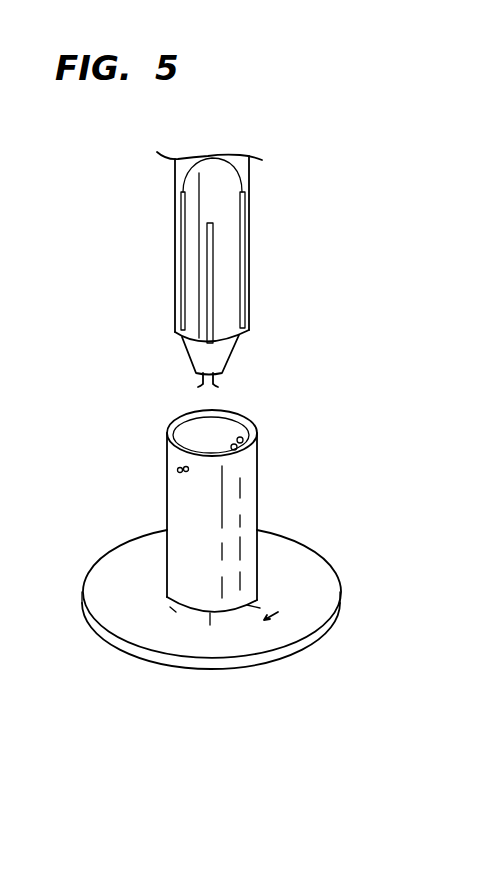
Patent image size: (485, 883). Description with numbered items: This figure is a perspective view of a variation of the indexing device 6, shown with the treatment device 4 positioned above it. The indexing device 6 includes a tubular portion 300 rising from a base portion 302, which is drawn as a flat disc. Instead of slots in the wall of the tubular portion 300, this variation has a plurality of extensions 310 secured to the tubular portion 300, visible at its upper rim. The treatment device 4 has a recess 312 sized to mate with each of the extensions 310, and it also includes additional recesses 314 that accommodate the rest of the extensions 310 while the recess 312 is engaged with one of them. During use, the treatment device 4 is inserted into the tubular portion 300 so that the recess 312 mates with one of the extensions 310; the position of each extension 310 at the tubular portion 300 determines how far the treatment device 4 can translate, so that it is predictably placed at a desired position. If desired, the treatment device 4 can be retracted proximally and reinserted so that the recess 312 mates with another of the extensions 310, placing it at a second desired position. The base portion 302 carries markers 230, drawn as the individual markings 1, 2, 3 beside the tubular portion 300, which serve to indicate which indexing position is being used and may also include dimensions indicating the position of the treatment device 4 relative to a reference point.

The treatment device 4 is at (236, 243).
The additional recesses 314 is at (212, 157).
The recess 312 is at (212, 273).
The indexing device 6 is at (233, 561).
The tubular portion 300 is at (256, 506).
The extensions 310 is at (243, 440).
The base portion 302 is at (233, 621).
The markers 230 is at (254, 607).
The position indicium 1 is at (271, 616).
The position indicium 2 is at (209, 632).
The position indicium 3 is at (161, 622).